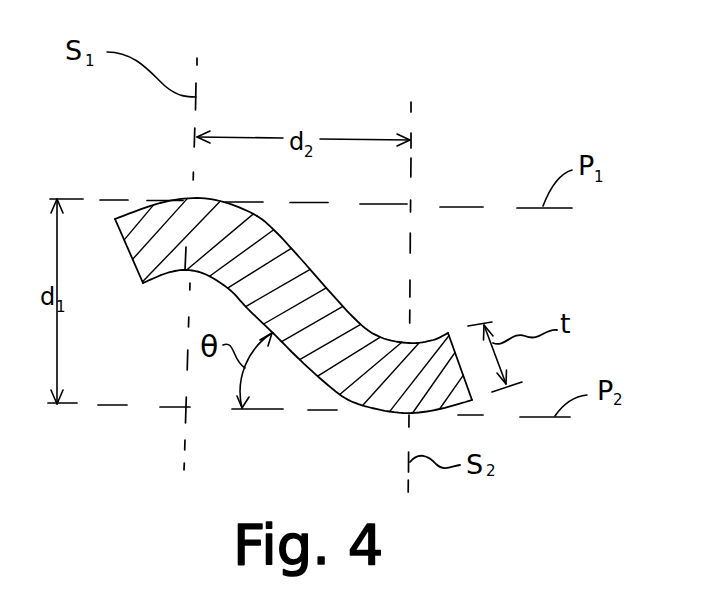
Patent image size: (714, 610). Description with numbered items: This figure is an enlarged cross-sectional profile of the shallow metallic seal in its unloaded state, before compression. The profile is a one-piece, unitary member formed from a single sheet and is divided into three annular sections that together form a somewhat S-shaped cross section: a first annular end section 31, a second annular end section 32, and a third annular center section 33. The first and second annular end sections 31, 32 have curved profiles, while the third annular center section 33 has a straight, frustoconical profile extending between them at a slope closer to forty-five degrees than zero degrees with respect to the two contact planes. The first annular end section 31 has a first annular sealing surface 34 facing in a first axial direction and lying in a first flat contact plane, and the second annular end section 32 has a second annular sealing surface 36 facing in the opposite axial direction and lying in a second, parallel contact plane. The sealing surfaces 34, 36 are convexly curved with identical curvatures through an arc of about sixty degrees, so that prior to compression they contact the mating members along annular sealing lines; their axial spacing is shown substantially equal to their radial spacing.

The first annular end section 31 is at (185, 272).
The second annular end section 32 is at (435, 363).
The third annular center section 33 is at (313, 305).
The first annular sealing surface 34 is at (193, 198).
The second annular sealing surface 36 is at (403, 414).